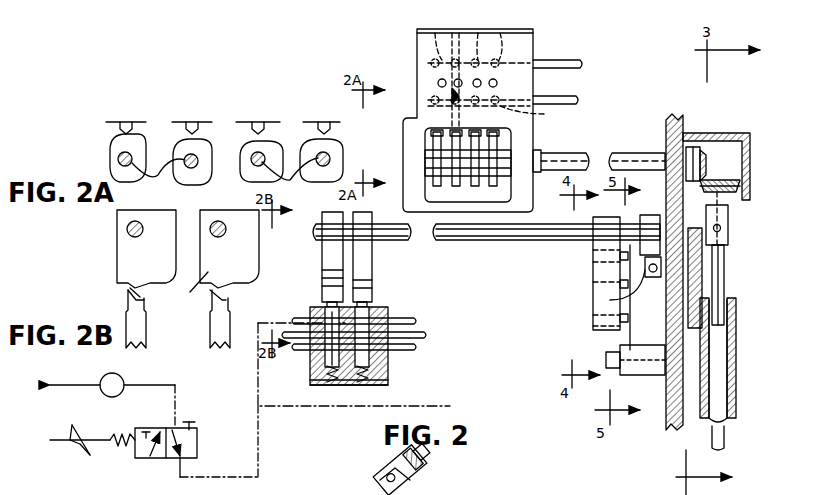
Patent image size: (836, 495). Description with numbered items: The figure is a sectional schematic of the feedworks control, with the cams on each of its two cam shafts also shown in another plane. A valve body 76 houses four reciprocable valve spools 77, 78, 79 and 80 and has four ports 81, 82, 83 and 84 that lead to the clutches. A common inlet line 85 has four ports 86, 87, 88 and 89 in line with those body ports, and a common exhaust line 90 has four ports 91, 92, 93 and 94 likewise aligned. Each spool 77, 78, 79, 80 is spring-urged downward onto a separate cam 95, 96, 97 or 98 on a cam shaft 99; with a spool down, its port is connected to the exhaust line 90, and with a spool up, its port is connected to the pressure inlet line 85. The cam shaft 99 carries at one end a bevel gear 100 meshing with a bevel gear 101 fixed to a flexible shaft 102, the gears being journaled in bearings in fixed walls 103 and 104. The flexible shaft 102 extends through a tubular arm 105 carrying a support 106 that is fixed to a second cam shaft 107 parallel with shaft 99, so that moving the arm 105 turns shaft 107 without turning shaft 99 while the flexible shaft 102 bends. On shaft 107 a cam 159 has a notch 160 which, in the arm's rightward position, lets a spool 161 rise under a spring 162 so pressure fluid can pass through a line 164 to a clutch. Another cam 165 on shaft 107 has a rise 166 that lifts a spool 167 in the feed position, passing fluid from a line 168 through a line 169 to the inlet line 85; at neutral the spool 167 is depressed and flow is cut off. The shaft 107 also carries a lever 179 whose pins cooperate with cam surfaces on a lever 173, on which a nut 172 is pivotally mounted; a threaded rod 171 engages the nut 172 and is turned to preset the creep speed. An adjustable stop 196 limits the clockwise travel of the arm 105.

In FIG. 2, the valve body 76 is at (528, 45).
In FIG. 2A, the valve spool 77 is at (150, 130).
In FIG. 2, the valve spool 77 is at (430, 150).
In FIG. 2A, the valve spool 78 is at (216, 130).
In FIG. 2, the valve spool 78 is at (448, 132).
In FIG. 2A, the valve spool 79 is at (278, 132).
In FIG. 2, the valve spool 79 is at (482, 132).
In FIG. 2A, the valve spool 80 is at (346, 132).
In FIG. 2, the valve spool 80 is at (500, 136).
In FIG. 2, the port 81 is at (440, 82).
In FIG. 2, the port 82 is at (432, 63).
In FIG. 2, the port 83 is at (480, 82).
In FIG. 2, the port 84 is at (496, 84).
In FIG. 2, the common inlet line 85 is at (578, 60).
In FIG. 2, the inlet port 86 is at (433, 30).
In FIG. 2, the inlet port 87 is at (452, 32).
In FIG. 2, the inlet port 88 is at (479, 32).
In FIG. 2, the inlet port 89 is at (503, 32).
In FIG. 2, the common exhaust line 90 is at (574, 100).
In FIG. 2, the exhaust port 91 is at (420, 108).
In FIG. 2, the exhaust port 92 is at (435, 89).
In FIG. 2, the exhaust port 93 is at (500, 91).
In FIG. 2, the exhaust port 94 is at (546, 114).
In FIG. 2A, the cam 95 is at (113, 145).
In FIG. 2, the cam 95 is at (440, 186).
In FIG. 2A, the cam 96 is at (204, 173).
In FIG. 2, the cam 96 is at (457, 186).
In FIG. 2A, the cam 97 is at (252, 178).
In FIG. 2, the cam 97 is at (475, 186).
In FIG. 2A, the cam 98 is at (310, 178).
In FIG. 2, the cam 98 is at (493, 186).
In FIG. 2A, the cam shaft 99 is at (225, 179).
In FIG. 2, the cam shaft 99 is at (584, 152).
In FIG. 2, the bevel gear 100 is at (696, 147).
In FIG. 2, the bevel gear 101 is at (742, 190).
In FIG. 2, the flexible shaft 102 is at (726, 265).
In FIG. 2, the fixed wall 103 is at (668, 118).
In FIG. 2, the fixed wall 104 is at (730, 212).
In FIG. 2, the tubular arm 105 is at (728, 348).
In FIG. 2, the support 106 is at (704, 278).
In FIG. 2, the cam shaft 107 is at (585, 238).
In FIG. 2B, the cam shaft 107 is at (137, 235).
In FIG. 2, the cam 159 is at (368, 268).
In FIG. 2B, the cam 159 is at (136, 288).
In FIG. 2B, the notch 160 is at (211, 277).
In FIG. 2, the spool 161 is at (372, 310).
In FIG. 2B, the spool 161 is at (210, 332).
In FIG. 2, the spring 162 is at (362, 380).
In FIG. 2, the line 164 is at (424, 345).
In FIG. 2, the cam 165 is at (326, 264).
In FIG. 2B, the cam 165 is at (140, 297).
In FIG. 2B, the rise 166 is at (144, 300).
In FIG. 2, the spool 167 is at (328, 312).
In FIG. 2B, the spool 167 is at (140, 340).
In FIG. 2, the line 168 is at (305, 318).
In FIG. 2, the line 169 is at (286, 332).
In FIG. 2, the threaded rod 171 is at (610, 300).
In FIG. 2, the nut 172 is at (652, 260).
In FIG. 2, the lever 173 is at (640, 333).
In FIG. 2, the lever 179 is at (600, 268).
In FIG. 2, the adjustable stop 196 is at (446, 490).